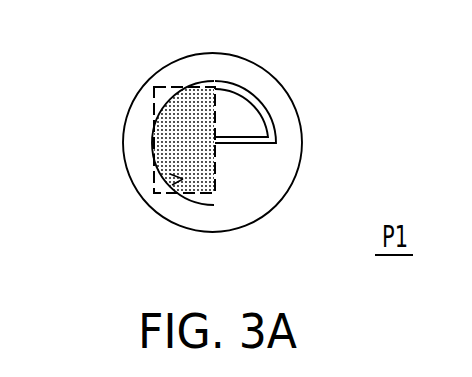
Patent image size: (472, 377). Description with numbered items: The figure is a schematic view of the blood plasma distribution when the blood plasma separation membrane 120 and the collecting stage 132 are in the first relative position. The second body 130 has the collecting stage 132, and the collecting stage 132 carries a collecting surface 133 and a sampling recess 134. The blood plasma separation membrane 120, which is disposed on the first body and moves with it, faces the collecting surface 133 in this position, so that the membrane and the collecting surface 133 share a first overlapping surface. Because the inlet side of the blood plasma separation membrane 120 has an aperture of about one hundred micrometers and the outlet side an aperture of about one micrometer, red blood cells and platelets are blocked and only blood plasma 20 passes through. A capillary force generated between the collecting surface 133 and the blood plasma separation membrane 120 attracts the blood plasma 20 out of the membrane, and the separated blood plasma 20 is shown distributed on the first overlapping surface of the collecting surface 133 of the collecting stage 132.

The blood plasma 20 is at (175, 130).
The blood plasma separation membrane 120 is at (185, 87).
The second body 130 is at (302, 140).
The collecting stage 132 is at (156, 164).
The collecting surface 133 is at (183, 179).
The sampling recess 134 is at (247, 111).